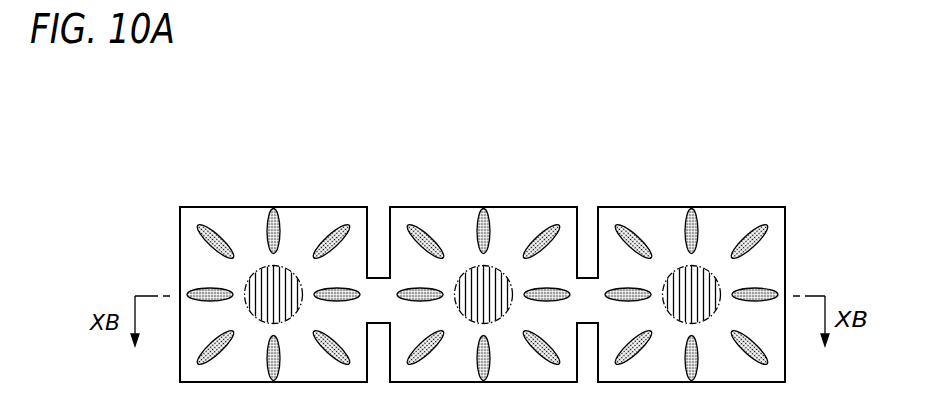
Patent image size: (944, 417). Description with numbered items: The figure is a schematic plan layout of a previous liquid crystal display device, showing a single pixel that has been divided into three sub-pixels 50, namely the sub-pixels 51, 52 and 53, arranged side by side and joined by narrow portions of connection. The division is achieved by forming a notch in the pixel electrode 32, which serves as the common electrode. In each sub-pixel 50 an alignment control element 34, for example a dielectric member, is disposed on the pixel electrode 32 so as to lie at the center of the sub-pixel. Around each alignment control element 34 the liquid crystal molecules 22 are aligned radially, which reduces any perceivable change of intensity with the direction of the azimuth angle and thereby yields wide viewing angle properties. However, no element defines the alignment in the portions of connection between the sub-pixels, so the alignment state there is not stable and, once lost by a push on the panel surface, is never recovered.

The liquid crystal molecules 22 is at (762, 237).
The pixel electrode 32 is at (773, 358).
The alignment control element 34 is at (285, 277).
The sub-pixel 50 is at (482, 231).
The sub-pixel 51 is at (209, 218).
The sub-pixel 52 is at (421, 218).
The sub-pixel 53 is at (628, 218).